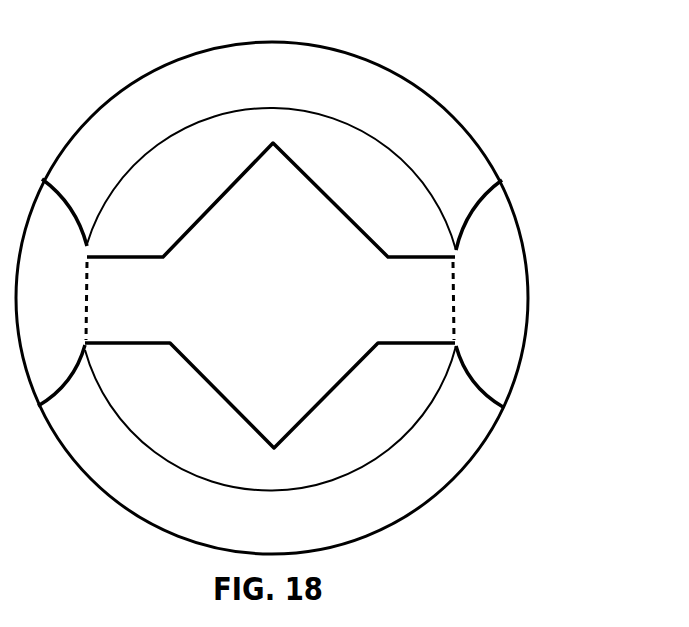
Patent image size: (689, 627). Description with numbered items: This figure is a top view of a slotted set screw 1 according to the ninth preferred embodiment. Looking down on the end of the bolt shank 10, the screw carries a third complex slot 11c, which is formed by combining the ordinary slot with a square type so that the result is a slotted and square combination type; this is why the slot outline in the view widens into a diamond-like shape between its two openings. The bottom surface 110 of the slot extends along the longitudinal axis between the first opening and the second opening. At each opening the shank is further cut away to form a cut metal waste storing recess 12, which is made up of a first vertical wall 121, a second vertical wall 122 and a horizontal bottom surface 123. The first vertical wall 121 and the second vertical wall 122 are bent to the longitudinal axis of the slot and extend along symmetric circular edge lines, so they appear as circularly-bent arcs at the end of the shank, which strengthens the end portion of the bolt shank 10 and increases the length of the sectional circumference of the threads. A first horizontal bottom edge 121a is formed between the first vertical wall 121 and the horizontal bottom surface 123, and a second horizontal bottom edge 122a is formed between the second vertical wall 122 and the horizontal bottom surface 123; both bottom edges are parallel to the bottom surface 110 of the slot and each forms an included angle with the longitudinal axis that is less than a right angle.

The slotted set screw 1 is at (323, 282).
The bolt shank 10 is at (368, 88).
The third complex slot 11c is at (319, 188).
The bottom surface of the slot 110 is at (270, 279).
The cut metal waste storing recess 12 is at (541, 283).
The first vertical wall 121 is at (519, 403).
The first horizontal bottom edge 121a is at (483, 380).
The second vertical wall 122 is at (533, 174).
The second horizontal bottom edge 122a is at (480, 205).
The horizontal bottom surface 123 is at (505, 297).